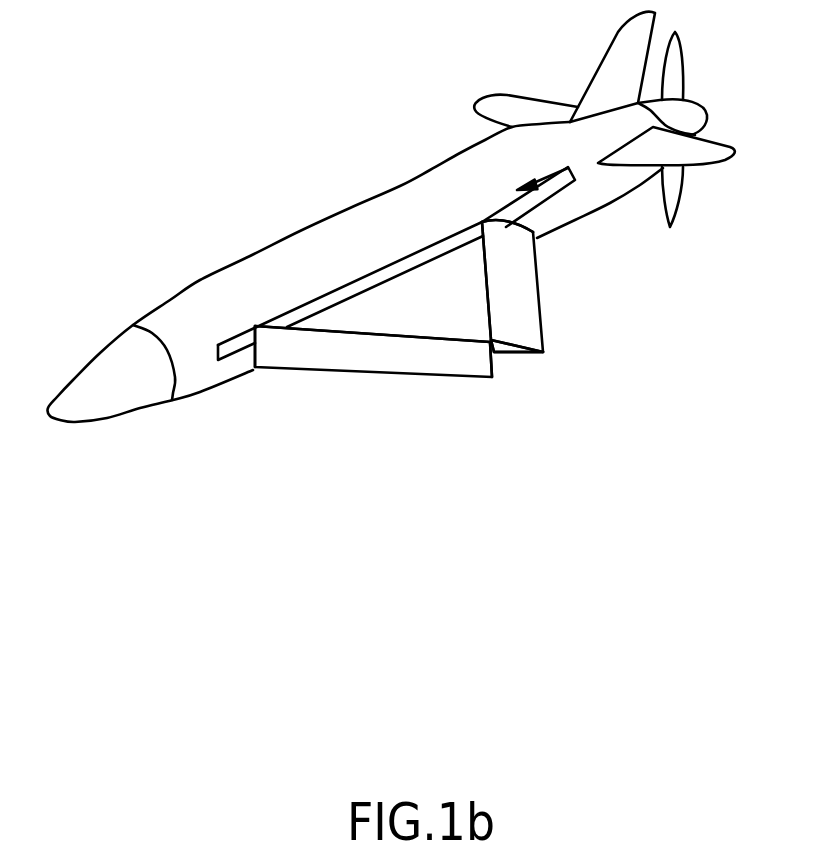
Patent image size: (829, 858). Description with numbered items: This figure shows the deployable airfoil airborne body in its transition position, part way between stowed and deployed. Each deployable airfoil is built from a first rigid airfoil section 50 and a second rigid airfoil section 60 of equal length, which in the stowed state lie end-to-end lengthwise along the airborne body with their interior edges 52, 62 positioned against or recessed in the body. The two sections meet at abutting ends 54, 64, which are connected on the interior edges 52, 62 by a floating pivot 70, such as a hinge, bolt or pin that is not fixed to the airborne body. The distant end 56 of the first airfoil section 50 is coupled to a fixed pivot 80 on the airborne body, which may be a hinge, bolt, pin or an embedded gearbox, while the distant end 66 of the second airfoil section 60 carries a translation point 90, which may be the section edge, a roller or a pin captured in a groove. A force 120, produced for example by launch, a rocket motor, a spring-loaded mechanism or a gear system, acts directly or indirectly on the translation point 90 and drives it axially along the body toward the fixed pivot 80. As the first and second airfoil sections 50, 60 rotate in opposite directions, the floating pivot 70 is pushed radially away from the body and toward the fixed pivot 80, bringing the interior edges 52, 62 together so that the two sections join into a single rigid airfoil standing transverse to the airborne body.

The first rigid airfoil section 50 is at (422, 378).
The interior edge of first airfoil section 52 is at (397, 335).
The abutting end of first airfoil section 54 is at (493, 354).
The distant end of first airfoil section 56 is at (253, 369).
The second rigid airfoil section 60 is at (541, 305).
The interior edge of second airfoil section 62 is at (480, 240).
The abutting end of second airfoil section 64 is at (512, 347).
The distant end of second airfoil section 66 is at (533, 231).
The floating pivot 70 is at (491, 341).
The fixed pivot 80 is at (253, 327).
The translation point 90 is at (480, 221).
The force 120 is at (550, 176).